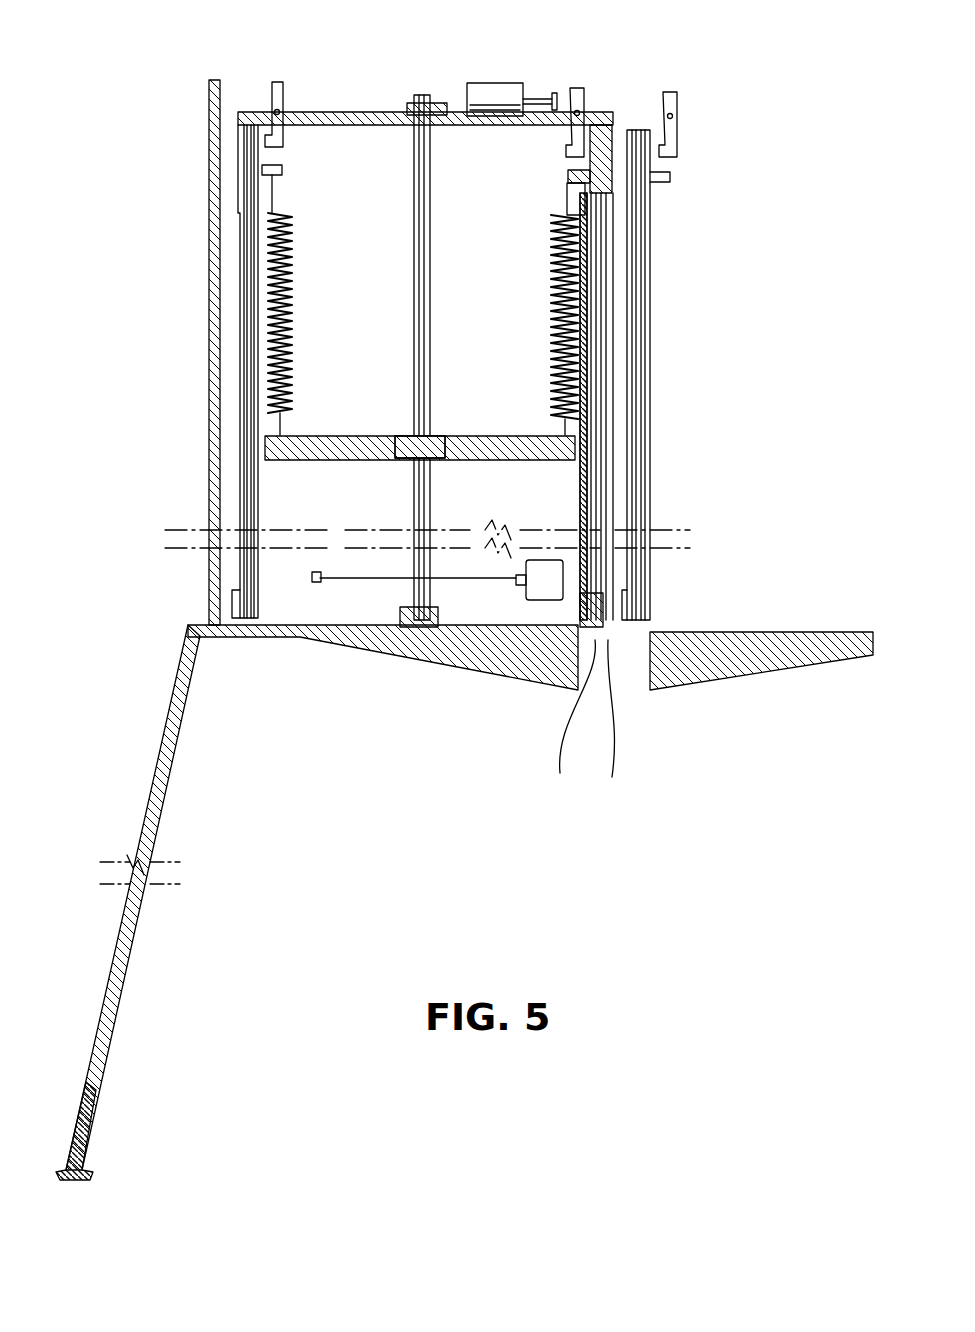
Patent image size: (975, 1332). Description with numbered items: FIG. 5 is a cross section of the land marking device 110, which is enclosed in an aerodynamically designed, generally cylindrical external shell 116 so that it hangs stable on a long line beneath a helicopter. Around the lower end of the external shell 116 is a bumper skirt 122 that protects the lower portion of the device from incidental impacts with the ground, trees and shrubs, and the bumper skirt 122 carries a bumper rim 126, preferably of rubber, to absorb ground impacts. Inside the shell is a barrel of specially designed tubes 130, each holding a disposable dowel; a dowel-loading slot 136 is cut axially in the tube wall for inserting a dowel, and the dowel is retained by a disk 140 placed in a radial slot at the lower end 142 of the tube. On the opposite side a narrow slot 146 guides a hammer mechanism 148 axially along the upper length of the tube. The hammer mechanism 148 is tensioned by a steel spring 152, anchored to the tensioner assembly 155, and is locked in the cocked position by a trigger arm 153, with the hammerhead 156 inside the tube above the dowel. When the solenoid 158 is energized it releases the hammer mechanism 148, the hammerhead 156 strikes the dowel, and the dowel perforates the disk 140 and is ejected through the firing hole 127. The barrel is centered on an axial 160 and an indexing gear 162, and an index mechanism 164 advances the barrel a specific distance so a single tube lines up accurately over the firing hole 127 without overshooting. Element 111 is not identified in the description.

The land marking device 110 is at (228, 82).
The guide wall 111 is at (595, 373).
The external shell 116 is at (209, 330).
The bumper skirt 122 is at (152, 785).
The bumper rim 126 is at (68, 1135).
The firing hole 127 is at (633, 700).
The tube 130 is at (240, 410).
The dowel-loading slot 136 is at (238, 258).
The disk 140 is at (562, 726).
The lower end of the tube 142 is at (624, 730).
The narrow slot 146 is at (262, 192).
The hammer mechanism 148 is at (600, 170).
The steel spring 152 is at (553, 360).
The trigger arm 153 is at (580, 103).
The tensioner assembly 155 is at (340, 435).
The hammerhead 156 is at (600, 208).
The solenoid 158 is at (488, 93).
The axial 160 is at (420, 260).
The indexing gear 162 is at (307, 583).
The index mechanism 164 is at (513, 583).